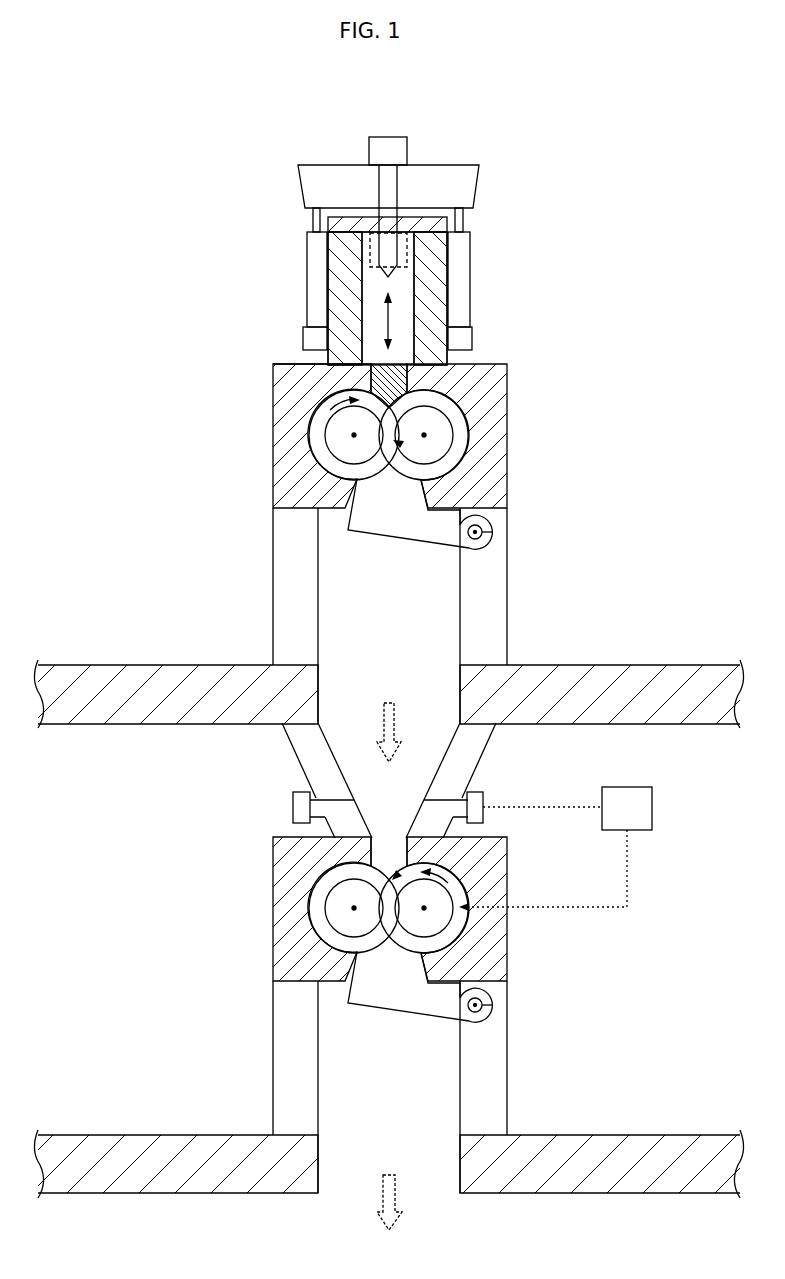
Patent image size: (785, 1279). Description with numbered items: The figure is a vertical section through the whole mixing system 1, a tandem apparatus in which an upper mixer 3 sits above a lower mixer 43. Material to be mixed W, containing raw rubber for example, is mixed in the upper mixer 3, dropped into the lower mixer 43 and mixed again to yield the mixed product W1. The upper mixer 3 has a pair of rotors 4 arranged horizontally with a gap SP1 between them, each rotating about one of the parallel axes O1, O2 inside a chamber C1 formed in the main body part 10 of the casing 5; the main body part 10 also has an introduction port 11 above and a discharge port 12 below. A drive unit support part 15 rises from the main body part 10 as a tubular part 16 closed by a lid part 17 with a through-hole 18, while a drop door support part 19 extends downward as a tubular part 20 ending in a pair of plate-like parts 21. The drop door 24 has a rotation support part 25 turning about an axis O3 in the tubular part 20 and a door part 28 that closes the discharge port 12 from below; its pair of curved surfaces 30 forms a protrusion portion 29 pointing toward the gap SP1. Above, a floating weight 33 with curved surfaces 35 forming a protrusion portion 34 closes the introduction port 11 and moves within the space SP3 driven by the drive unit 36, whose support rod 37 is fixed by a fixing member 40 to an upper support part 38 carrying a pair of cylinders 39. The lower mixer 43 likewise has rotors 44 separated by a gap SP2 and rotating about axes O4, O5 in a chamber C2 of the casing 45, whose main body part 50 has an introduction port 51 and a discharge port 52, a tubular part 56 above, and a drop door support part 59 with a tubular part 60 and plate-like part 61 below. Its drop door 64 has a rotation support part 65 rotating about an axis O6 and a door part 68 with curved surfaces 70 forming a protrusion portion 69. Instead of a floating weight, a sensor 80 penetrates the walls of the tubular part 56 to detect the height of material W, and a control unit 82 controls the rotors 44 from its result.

The mixing system 1 is at (590, 250).
The upper mixer 3 is at (584, 457).
The rotors 4 is at (337, 465).
The casing 5 is at (134, 237).
The main body part 10 is at (277, 390).
The introduction port 11 is at (328, 372).
The discharge port 12 is at (395, 525).
The drive unit support part 15 is at (184, 210).
The tubular part 16 is at (335, 280).
The lid part 17 is at (328, 224).
The through-hole 18 is at (384, 215).
The drop door support part 19 is at (183, 533).
The tubular part 20 is at (273, 547).
The plate-like parts 21 is at (177, 667).
The drop door 24 is at (355, 629).
The rotation support part 25 is at (443, 560).
The door part 28 is at (385, 560).
The protrusion portion 29 is at (360, 525).
The curved surfaces 30 is at (336, 487).
The floating weight 33 is at (335, 250).
The protrusion portion 34 is at (407, 385).
The curved surfaces 35 is at (318, 428).
The drive unit 36 is at (559, 140).
The support rod 37 is at (440, 268).
The upper support part 38 is at (472, 192).
The cylinders 39 is at (462, 250).
The fixing member 40 is at (408, 150).
The lower mixer 43 is at (530, 996).
The rotors 44 is at (318, 928).
The casing 45 is at (134, 790).
The main body part 50 is at (277, 880).
The introduction port 51 is at (371, 848).
The discharge port 52 is at (395, 998).
The tubular part 56 is at (312, 790).
The drop door support part 59 is at (183, 1008).
The tubular part 60 is at (273, 1018).
The plate-like part 61 is at (177, 1137).
The drop door 64 is at (355, 1101).
The rotation support part 65 is at (443, 1033).
The door part 68 is at (385, 1033).
The protrusion portion 69 is at (360, 998).
The curved surfaces 70 is at (336, 950).
The sensor 80 is at (293, 808).
The control unit 82 is at (652, 807).
The chamber C1 is at (330, 410).
The chamber C2 is at (448, 883).
The axis O1 is at (349, 438).
The axis O2 is at (429, 437).
The axis O3 is at (493, 533).
The axis O4 is at (349, 909).
The axis O5 is at (429, 907).
The axis O6 is at (493, 1006).
The gap SP1 is at (404, 445).
The gap SP2 is at (400, 872).
The space SP3 is at (416, 300).
The material to be mixed W is at (380, 722).
The mixed product W1 is at (380, 1192).